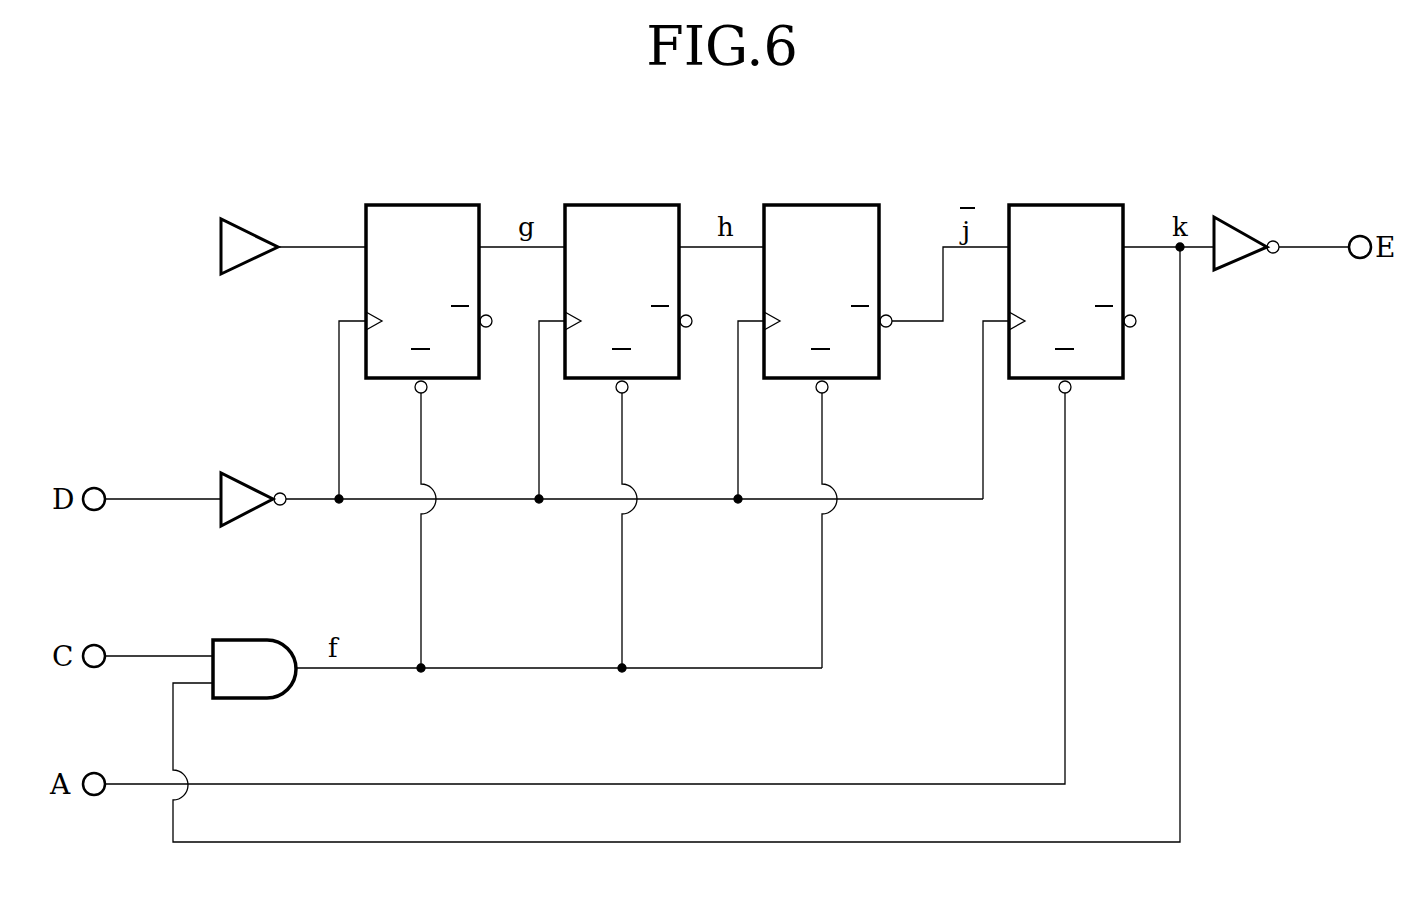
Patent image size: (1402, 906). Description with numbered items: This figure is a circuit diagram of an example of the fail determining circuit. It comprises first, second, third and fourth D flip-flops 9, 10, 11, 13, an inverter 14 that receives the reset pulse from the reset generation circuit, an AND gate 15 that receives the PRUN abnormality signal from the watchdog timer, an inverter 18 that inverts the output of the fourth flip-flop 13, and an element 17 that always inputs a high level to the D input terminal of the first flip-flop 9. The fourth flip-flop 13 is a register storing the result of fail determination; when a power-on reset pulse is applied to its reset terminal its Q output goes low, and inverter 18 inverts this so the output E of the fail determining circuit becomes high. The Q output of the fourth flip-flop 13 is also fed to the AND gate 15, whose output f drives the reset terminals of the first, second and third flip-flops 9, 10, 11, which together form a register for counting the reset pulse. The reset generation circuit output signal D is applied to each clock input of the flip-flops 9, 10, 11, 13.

The first D flip-flop 9 is at (415, 205).
The second D flip-flop 10 is at (616, 205).
The third D flip-flop 11 is at (815, 205).
The fourth D flip-flop 13 is at (1059, 205).
The inverter 14 is at (237, 473).
The AND gate 15 is at (233, 699).
The element 17 is at (233, 219).
The inverter 18 is at (1228, 217).